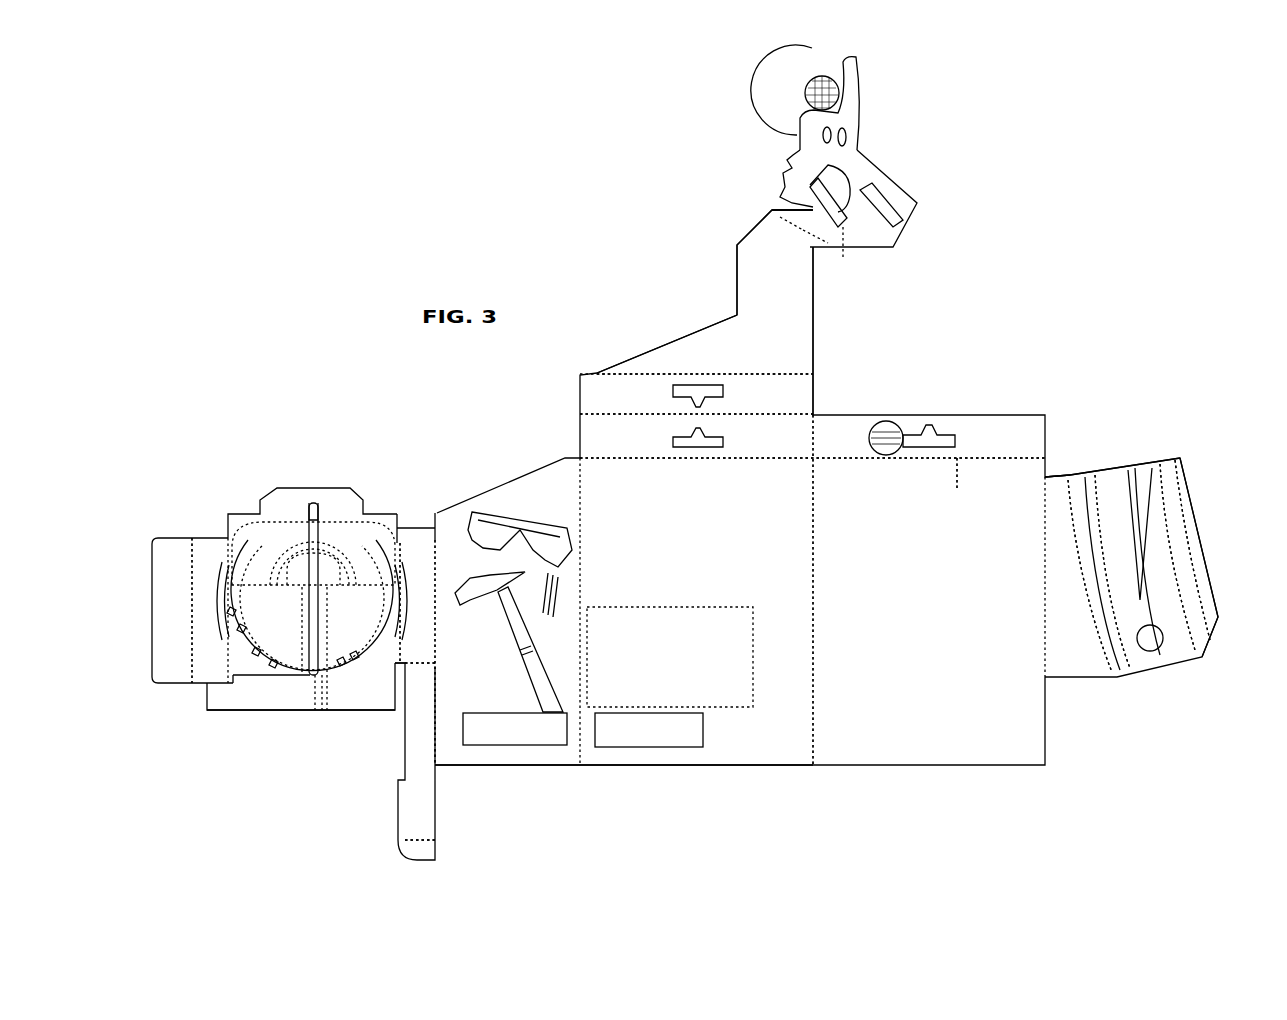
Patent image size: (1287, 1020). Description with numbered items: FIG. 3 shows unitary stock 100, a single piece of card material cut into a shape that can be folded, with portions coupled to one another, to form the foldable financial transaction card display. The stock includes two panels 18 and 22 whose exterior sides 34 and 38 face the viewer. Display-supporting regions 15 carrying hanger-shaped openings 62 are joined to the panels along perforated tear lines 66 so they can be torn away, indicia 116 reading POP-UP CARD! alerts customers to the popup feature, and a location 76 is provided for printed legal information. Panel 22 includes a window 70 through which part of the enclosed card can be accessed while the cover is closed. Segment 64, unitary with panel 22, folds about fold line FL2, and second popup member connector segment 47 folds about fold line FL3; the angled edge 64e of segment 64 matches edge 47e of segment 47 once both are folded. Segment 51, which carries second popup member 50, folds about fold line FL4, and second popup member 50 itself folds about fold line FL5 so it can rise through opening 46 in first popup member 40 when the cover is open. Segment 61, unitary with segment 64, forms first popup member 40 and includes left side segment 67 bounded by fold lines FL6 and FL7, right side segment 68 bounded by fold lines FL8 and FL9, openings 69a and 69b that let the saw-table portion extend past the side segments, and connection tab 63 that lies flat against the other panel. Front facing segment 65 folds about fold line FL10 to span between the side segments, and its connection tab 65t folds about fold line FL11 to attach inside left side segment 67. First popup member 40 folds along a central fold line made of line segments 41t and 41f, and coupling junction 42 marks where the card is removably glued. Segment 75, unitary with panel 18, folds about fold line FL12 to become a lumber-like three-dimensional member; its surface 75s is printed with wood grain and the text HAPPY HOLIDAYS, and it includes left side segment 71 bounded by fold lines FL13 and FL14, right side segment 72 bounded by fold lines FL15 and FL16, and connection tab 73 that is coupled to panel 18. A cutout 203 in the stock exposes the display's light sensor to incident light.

The unitary stock 100 is at (978, 284).
The display-supporting region 15 is at (847, 428).
The panel 18 is at (889, 776).
The panel 22 is at (740, 775).
The side 34 is at (918, 489).
The side 38 is at (812, 487).
The first popup member 40 is at (312, 585).
The central fold line segment 41t is at (311, 503).
The central fold line segment 41f is at (420, 747).
The coupling junction 42 is at (227, 700).
The opening 46 is at (310, 520).
The second popup member connector segment 47 is at (775, 312).
The edge 47e is at (643, 345).
The second popup member 50 is at (860, 168).
The segment 51 is at (800, 223).
The segment 61 is at (352, 728).
The opening 62 is at (722, 437).
The connection tab 63 is at (192, 610).
The segment 64 is at (503, 638).
The edge 64e is at (563, 452).
The front facing segment 65 is at (415, 761).
The front facing segment connection tab 65t is at (415, 852).
The tear line 66 is at (722, 374).
The left side segment 67 is at (206, 610).
The right side segment 68 is at (416, 588).
The opening 69a is at (220, 570).
The opening 69b is at (400, 552).
The window 70 is at (607, 737).
The left side segment 71 is at (1062, 480).
The right side segment 72 is at (1163, 470).
The connection tab 73 is at (1210, 615).
The segment 75 is at (1188, 672).
The surface 75s is at (1133, 536).
The location 76 is at (640, 630).
The indicia 116 is at (890, 421).
The cutout 203 is at (1155, 630).
The fold line FL2 is at (585, 496).
The fold line FL3 is at (590, 413).
The fold line FL4 is at (770, 212).
The fold line FL5 is at (840, 240).
The fold line FL6 is at (190, 555).
The fold line FL7 is at (230, 548).
The fold line FL8 is at (400, 535).
The fold line FL9 is at (437, 530).
The fold line FL10 is at (422, 665).
The fold line FL11 is at (437, 840).
The fold line FL12 is at (1040, 580).
The fold line FL13 is at (1093, 640).
The fold line FL14 is at (1105, 660).
The fold line FL15 is at (1135, 475).
The fold line FL16 is at (1170, 490).